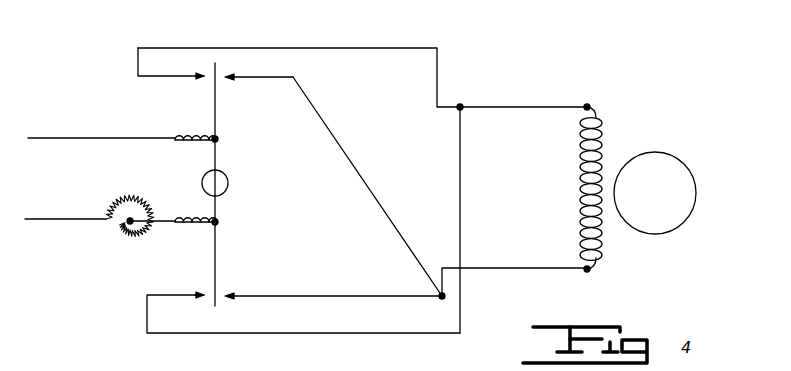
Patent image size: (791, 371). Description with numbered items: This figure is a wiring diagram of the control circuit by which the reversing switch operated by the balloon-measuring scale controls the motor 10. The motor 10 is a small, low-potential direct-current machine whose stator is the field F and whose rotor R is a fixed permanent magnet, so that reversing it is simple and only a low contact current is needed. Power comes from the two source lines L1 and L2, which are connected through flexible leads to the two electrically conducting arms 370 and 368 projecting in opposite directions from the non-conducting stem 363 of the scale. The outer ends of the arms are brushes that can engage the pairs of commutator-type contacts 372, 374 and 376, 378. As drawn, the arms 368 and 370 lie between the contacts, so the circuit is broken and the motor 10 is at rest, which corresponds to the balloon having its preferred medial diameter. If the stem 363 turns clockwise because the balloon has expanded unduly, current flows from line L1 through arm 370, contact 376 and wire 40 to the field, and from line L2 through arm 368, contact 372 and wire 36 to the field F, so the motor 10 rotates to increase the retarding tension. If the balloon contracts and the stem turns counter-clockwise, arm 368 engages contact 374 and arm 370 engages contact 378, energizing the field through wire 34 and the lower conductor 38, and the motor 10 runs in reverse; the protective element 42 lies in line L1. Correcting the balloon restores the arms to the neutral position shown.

The motor 10 is at (654, 184).
The wire 34 is at (318, 48).
The wire 36 is at (348, 151).
The lower conductor 38 is at (350, 296).
The wire 40 is at (318, 333).
The fuse / protective element 42 is at (128, 244).
The stem 363 is at (228, 183).
The indicating arm 368 is at (217, 131).
The arm 370 is at (218, 259).
The contact 372 is at (231, 81).
The contact 374 is at (200, 79).
The contact 376 is at (197, 292).
The contact 378 is at (232, 292).
The field F is at (599, 247).
The rotor / armature R is at (661, 229).
The line L1 is at (65, 233).
The line L2 is at (101, 151).